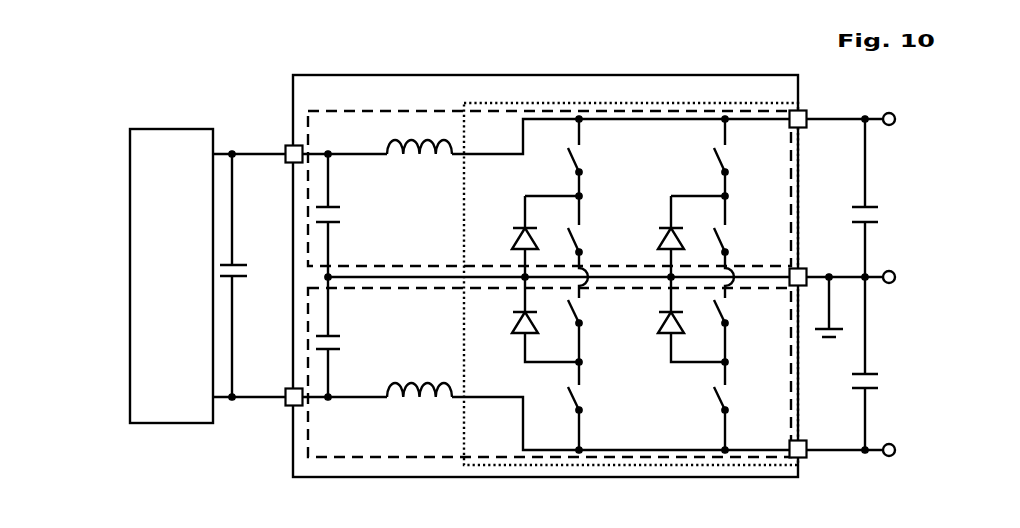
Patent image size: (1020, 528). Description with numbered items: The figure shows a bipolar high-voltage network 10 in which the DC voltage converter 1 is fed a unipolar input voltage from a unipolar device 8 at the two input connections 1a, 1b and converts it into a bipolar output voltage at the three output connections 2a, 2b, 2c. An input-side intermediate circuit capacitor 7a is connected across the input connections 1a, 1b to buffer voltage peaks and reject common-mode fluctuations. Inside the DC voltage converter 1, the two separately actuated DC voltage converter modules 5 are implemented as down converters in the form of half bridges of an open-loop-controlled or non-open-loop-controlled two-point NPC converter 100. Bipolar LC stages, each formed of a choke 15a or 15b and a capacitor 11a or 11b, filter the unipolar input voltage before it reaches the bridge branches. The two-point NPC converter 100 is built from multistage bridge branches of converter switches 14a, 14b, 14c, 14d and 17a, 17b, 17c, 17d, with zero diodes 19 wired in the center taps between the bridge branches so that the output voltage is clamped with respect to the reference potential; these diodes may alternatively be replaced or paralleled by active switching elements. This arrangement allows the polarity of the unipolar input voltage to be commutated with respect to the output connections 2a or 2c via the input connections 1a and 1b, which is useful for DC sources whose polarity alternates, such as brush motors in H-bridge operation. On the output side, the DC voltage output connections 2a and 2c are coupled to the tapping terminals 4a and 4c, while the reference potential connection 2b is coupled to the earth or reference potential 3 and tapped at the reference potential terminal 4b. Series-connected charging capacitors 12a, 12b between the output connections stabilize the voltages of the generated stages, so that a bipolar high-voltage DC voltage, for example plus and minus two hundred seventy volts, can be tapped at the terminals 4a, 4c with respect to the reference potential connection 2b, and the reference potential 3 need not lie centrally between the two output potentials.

The bipolar high-voltage network 10 is at (118, 110).
The unipolar device 8 is at (130, 338).
The intermediate circuit capacitor 7a is at (238, 261).
The DC voltage converter 1 is at (591, 478).
The input connection 1a is at (286, 147).
The input connection 1b is at (286, 403).
The DC voltage output connection 2a is at (806, 126).
The reference potential connection 2b is at (806, 270).
The DC voltage output connection 2c is at (806, 457).
The DC voltage converter module 5 is at (428, 110).
The two-point NPC converter 100 is at (699, 465).
The choke 15a is at (415, 150).
The choke 15b is at (415, 398).
The capacitor 11a is at (332, 225).
The capacitor 11b is at (334, 336).
The converter switch 14a is at (585, 159).
The converter switch 14b is at (585, 237).
The converter switch 14c is at (585, 321).
The converter switch 14d is at (585, 399).
The converter switch 17a is at (731, 159).
The converter switch 17b is at (731, 237).
The converter switch 17c is at (731, 321).
The converter switch 17d is at (731, 399).
The zero diode 19 is at (514, 233).
The charging capacitor 12a is at (871, 206).
The charging capacitor 12b is at (871, 392).
The reference potential 3 is at (824, 340).
The tapping terminal 4a is at (896, 124).
The reference potential terminal 4b is at (896, 282).
The tapping terminal 4c is at (896, 456).